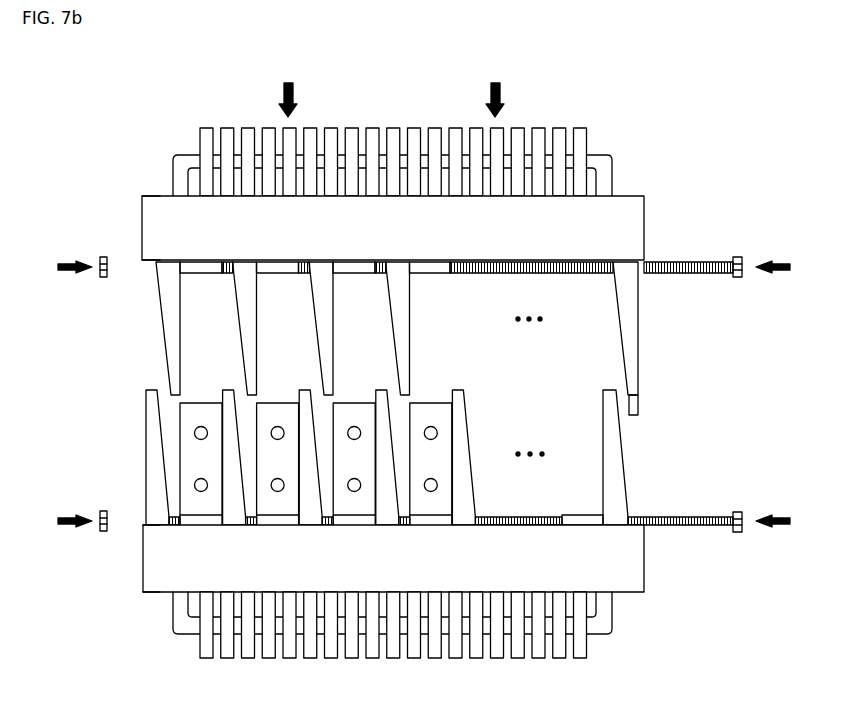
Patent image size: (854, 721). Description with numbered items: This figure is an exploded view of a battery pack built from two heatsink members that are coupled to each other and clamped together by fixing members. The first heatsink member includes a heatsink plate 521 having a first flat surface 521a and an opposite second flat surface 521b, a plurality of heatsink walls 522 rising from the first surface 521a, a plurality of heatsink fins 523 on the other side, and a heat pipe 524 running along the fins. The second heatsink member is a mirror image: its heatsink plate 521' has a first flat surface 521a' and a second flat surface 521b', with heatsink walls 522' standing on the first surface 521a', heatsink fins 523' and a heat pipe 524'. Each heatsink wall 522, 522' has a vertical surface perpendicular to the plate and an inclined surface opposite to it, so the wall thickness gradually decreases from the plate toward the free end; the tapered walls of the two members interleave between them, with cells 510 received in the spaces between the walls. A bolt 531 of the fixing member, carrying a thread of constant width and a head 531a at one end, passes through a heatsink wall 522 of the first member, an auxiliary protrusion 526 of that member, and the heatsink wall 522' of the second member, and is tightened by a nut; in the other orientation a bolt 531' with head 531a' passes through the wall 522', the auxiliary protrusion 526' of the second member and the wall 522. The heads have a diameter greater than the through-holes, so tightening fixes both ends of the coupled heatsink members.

The battery cell 510 is at (186, 462).
The heatsink plate 521 is at (359, 558).
The first flat surface 521a is at (114, 540).
The second flat surface 521b is at (114, 596).
The heatsink plate 521' is at (354, 228).
The first flat surface 521a' is at (112, 244).
The second flat surface 521b' is at (112, 192).
The heatsink wall 522 is at (641, 457).
The heatsink wall 522' is at (656, 338).
The heatsink fins 523 is at (393, 649).
The heatsink fins 523' is at (393, 140).
The heat pipe 524 is at (392, 649).
The heat pipe 524' is at (392, 140).
The auxiliary protrusion 526 is at (374, 457).
The auxiliary protrusion 526' is at (384, 328).
The bolt 531 is at (680, 496).
The head 531a is at (738, 499).
The upper fastening bolt 531' is at (688, 267).
The upper nut 531a' is at (737, 267).